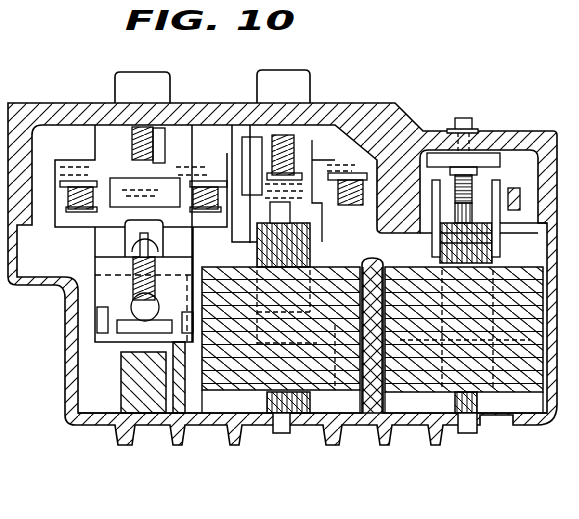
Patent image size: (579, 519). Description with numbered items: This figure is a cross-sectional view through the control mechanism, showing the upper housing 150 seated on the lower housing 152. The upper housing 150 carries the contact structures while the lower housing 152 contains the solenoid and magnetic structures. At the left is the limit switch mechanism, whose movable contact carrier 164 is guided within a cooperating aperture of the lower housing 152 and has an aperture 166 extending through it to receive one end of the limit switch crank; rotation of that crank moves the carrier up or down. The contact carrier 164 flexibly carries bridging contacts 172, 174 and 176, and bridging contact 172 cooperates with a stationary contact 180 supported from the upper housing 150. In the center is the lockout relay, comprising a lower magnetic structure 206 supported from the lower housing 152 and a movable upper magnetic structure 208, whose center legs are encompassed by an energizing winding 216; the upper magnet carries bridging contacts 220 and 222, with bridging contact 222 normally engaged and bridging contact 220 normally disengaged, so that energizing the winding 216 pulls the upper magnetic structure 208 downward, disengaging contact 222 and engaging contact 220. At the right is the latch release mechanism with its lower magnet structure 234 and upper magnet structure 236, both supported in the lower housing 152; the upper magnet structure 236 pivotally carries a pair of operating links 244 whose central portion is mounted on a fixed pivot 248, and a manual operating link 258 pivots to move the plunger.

The upper housing 150 is at (366, 102).
The lower housing 152 is at (519, 425).
The movable contact carrier 164 is at (108, 290).
The aperture 166 is at (143, 227).
The bridging contact 172 is at (93, 181).
The bridging contact 174 is at (144, 152).
The bridging contact 176 is at (213, 181).
The stationary contact 180 is at (140, 190).
The lower magnetic structure 206 is at (267, 412).
The upper magnetic structure 208 is at (296, 254).
The energizing winding 216 is at (335, 393).
The bridging contact 220 is at (275, 150).
The bridging contact 222 is at (346, 173).
The lower magnet structure 234 is at (473, 432).
The upper magnet structure 236 is at (493, 263).
The operating links 244 is at (428, 243).
The fixed pivot 248 is at (502, 230).
The operating link 258 is at (515, 189).